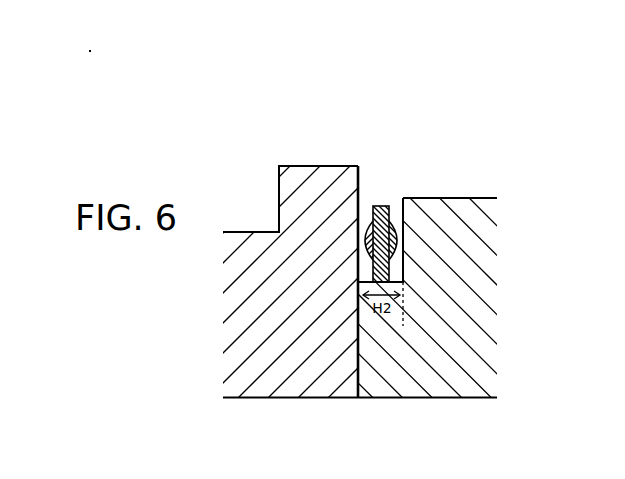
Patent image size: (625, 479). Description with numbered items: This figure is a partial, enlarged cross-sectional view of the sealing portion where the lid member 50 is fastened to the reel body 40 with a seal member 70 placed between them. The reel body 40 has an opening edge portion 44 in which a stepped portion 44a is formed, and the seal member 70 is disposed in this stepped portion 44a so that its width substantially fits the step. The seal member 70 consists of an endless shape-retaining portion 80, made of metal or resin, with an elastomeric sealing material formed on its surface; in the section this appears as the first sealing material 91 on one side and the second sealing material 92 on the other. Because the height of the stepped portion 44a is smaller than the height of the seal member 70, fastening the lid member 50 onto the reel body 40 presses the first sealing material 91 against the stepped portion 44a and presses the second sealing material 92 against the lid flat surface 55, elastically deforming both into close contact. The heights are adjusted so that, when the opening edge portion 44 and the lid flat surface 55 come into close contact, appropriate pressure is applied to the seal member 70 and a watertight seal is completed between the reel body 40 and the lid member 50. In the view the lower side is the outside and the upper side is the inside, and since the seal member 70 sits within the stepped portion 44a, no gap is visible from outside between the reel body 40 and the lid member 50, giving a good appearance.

The reel body 40 is at (483, 233).
The opening edge portion 44 is at (356, 322).
The stepped portion 44a is at (402, 200).
The lid member 50 is at (235, 295).
The lid flat surface 55 is at (358, 379).
The seal member 70 is at (380, 167).
The shape-retaining portion 80 is at (382, 206).
The first sealing material 91 is at (395, 180).
The second sealing material 92 is at (367, 209).